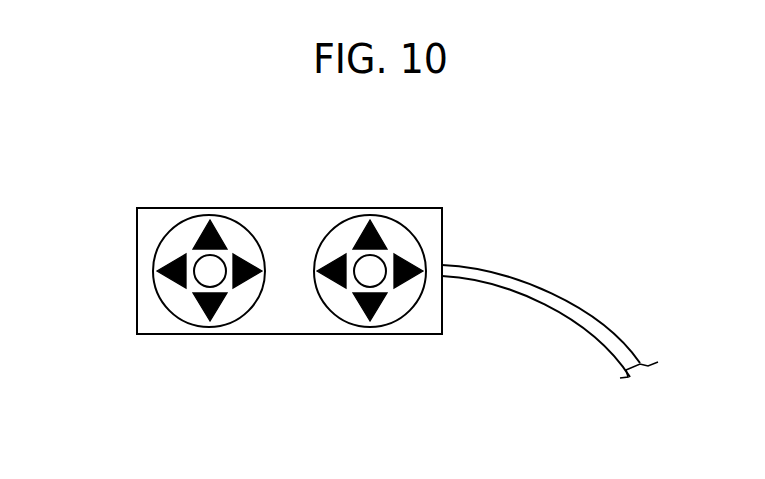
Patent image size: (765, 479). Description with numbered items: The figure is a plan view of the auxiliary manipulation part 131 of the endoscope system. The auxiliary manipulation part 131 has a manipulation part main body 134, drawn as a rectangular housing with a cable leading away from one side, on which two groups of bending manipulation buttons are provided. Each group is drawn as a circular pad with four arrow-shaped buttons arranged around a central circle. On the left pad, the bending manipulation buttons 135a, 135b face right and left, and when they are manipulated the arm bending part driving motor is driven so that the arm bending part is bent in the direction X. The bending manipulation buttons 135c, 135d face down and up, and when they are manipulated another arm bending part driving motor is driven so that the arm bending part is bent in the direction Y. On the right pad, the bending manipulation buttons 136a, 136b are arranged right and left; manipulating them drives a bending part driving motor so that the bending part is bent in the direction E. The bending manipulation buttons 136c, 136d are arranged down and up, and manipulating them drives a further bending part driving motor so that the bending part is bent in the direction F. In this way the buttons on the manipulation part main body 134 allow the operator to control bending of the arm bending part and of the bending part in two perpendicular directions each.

The auxiliary manipulation part 131 is at (155, 208).
The manipulation part main body 134 is at (308, 334).
The bending manipulation button 135a is at (250, 284).
The bending manipulation button 135b is at (162, 284).
The bending manipulation button 135c is at (203, 313).
The bending manipulation button 135d is at (206, 223).
The bending manipulation button 136a is at (413, 262).
The bending manipulation button 136b is at (332, 258).
The bending manipulation button 136c is at (380, 316).
The bending manipulation button 136d is at (360, 220).